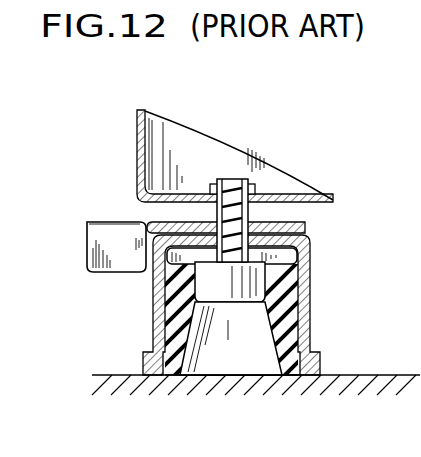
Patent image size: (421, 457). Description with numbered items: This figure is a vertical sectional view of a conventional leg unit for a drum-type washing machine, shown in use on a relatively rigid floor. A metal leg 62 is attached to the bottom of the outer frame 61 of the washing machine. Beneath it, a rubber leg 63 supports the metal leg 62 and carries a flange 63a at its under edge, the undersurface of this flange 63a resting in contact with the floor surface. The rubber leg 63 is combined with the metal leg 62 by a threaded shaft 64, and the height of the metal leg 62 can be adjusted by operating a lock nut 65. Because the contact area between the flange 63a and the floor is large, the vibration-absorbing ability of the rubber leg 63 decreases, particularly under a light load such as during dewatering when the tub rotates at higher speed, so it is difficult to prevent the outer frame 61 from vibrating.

The outer frame 61 is at (137, 153).
The metal leg 62 is at (312, 293).
The rubber leg 63 is at (272, 353).
The flange 63a is at (287, 372).
The threaded shaft 64 is at (248, 212).
The lock nut 65 is at (87, 250).